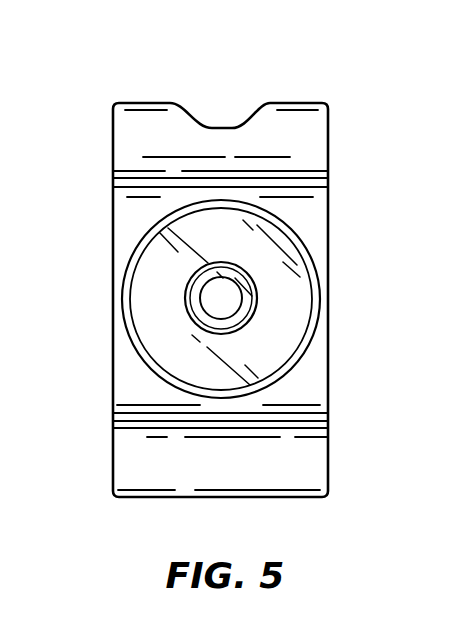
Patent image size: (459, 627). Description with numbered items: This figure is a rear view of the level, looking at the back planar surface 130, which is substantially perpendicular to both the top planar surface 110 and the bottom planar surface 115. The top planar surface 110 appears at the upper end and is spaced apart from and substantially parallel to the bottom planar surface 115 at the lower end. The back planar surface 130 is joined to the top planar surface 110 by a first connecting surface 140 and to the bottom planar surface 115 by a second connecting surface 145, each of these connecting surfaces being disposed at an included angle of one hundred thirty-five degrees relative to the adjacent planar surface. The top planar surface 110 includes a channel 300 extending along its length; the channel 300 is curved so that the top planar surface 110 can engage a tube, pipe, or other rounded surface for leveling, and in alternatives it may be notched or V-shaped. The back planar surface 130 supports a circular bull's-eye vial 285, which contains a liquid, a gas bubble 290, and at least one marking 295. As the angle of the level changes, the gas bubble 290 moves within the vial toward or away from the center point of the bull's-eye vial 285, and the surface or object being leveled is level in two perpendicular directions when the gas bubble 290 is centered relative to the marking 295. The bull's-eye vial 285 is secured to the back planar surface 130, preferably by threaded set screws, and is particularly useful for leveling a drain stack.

The top planar surface 110 is at (153, 102).
The channel 300 is at (227, 94).
The first connecting surface 140 is at (285, 137).
The back planar surface 130 is at (305, 377).
The second connecting surface 145 is at (295, 462).
The bottom planar surface 115 is at (163, 497).
The bull's-eye vial 285 is at (152, 240).
The gas bubble 290 is at (245, 265).
The marking 295 is at (257, 300).